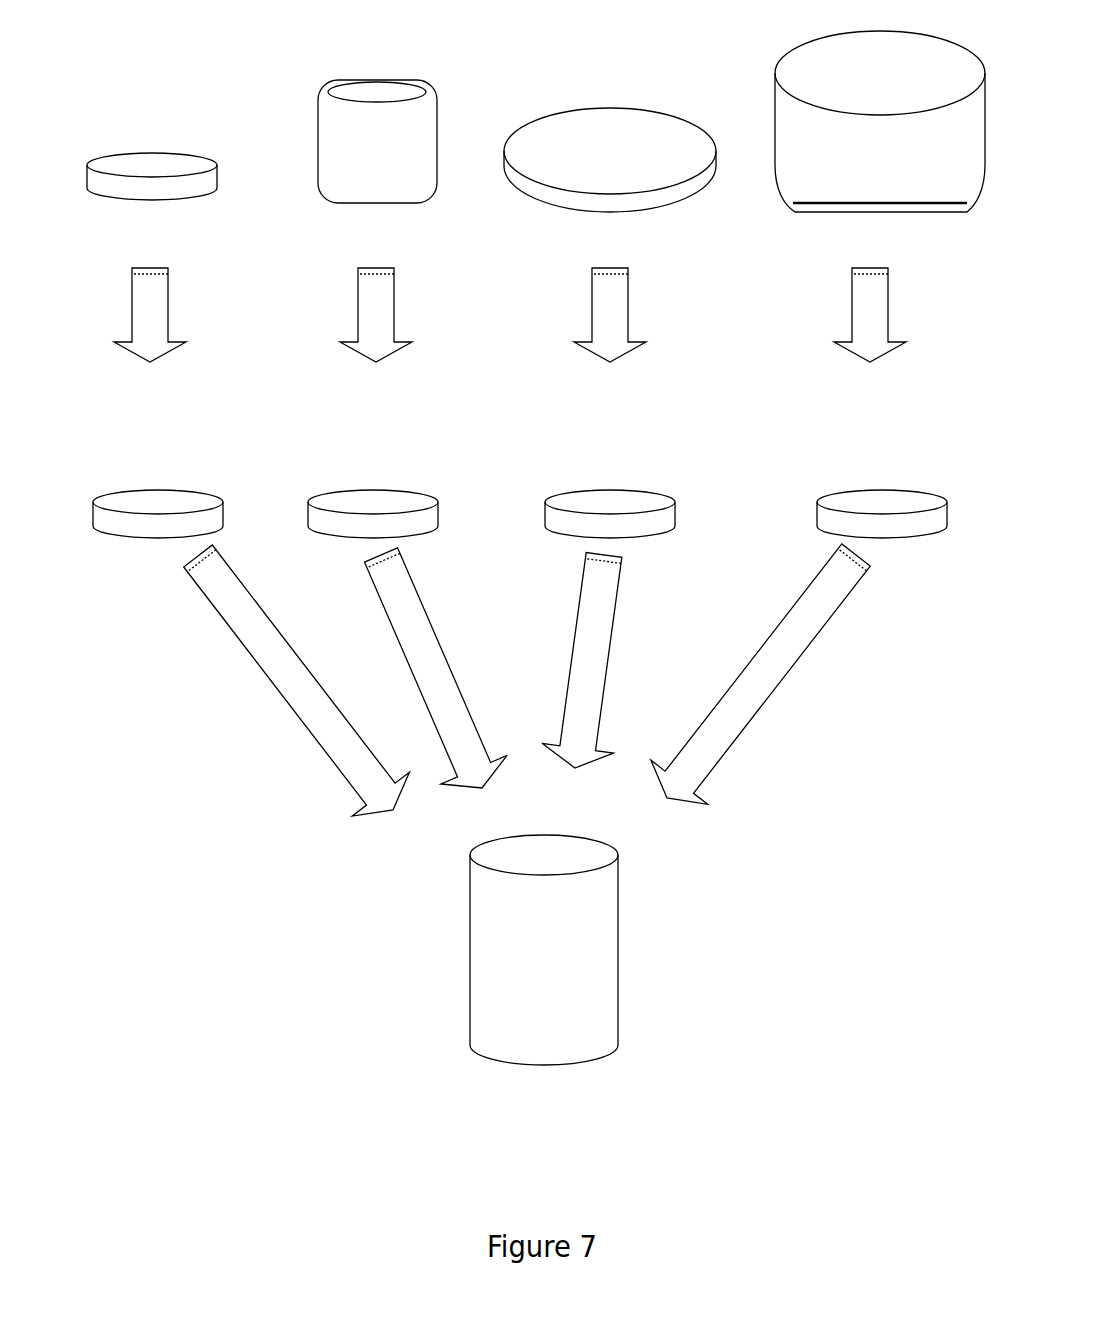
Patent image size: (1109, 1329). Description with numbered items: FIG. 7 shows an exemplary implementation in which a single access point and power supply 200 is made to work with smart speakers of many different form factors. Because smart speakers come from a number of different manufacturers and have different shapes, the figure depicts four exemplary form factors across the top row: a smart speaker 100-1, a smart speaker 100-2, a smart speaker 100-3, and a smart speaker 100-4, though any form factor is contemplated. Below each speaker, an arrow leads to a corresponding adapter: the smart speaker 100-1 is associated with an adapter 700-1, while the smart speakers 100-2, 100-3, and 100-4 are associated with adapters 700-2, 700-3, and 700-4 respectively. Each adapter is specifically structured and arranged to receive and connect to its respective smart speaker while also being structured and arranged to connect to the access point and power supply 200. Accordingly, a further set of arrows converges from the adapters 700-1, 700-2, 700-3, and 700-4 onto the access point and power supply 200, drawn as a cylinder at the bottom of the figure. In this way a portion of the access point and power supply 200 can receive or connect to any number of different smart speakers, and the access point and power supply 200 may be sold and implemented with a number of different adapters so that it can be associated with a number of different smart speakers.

The smart speaker 100-1 is at (167, 120).
The smart speaker 100-2 is at (307, 60).
The smart speaker 100-3 is at (532, 66).
The smart speaker 100-4 is at (732, 66).
The adapter 700-1 is at (167, 467).
The adapter 700-2 is at (367, 467).
The adapter 700-3 is at (574, 467).
The adapter 700-4 is at (800, 467).
The access point and power supply 200 is at (544, 950).